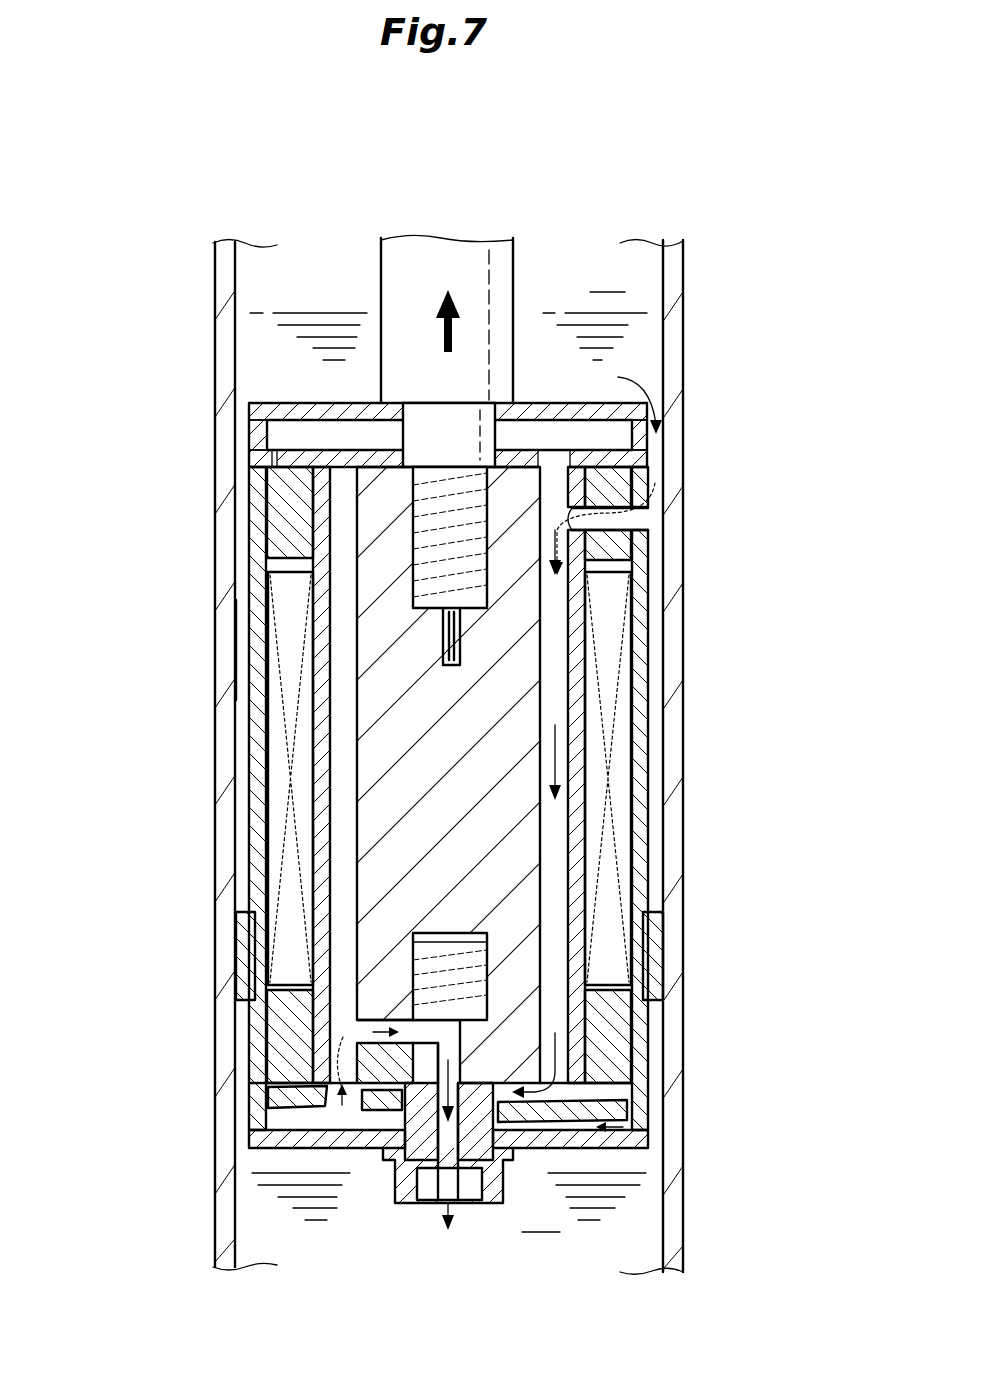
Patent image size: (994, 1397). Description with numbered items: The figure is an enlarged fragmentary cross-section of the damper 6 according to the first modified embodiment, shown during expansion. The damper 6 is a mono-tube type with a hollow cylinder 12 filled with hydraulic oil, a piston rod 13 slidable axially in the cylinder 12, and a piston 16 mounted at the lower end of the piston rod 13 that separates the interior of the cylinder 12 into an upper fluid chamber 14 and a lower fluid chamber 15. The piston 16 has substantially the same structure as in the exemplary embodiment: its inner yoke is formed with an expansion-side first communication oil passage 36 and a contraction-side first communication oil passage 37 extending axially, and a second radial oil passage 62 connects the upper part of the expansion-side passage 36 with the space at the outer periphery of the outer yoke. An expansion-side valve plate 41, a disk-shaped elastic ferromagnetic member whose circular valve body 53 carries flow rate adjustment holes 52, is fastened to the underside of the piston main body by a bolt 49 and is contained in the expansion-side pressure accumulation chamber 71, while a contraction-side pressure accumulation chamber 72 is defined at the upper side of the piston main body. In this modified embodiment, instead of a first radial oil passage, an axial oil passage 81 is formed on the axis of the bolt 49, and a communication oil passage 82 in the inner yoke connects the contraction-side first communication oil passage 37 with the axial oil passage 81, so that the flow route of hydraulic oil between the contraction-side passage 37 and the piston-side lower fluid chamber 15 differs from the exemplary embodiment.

The damper 6 is at (166, 297).
The cylinder 12 is at (221, 460).
The piston rod 13 is at (507, 265).
The upper fluid chamber 14 is at (607, 278).
The lower fluid chamber 15 is at (542, 1219).
The piston 16 is at (245, 648).
The expansion-side first communication oil passage 36 is at (580, 855).
The contraction-side first communication oil passage 37 is at (323, 812).
The expansion-side valve plate 41 is at (287, 1103).
The bolt 49 is at (393, 1195).
The flow rate adjustment holes 52 is at (305, 1146).
The valve body 53 is at (600, 1120).
The second radial oil passage 62 is at (650, 542).
The expansion-side pressure accumulation chamber 71 is at (363, 1125).
The contraction-side pressure accumulation chamber 72 is at (528, 428).
The axial oil passage 81 is at (457, 1140).
The communication oil passage 82 is at (357, 1030).